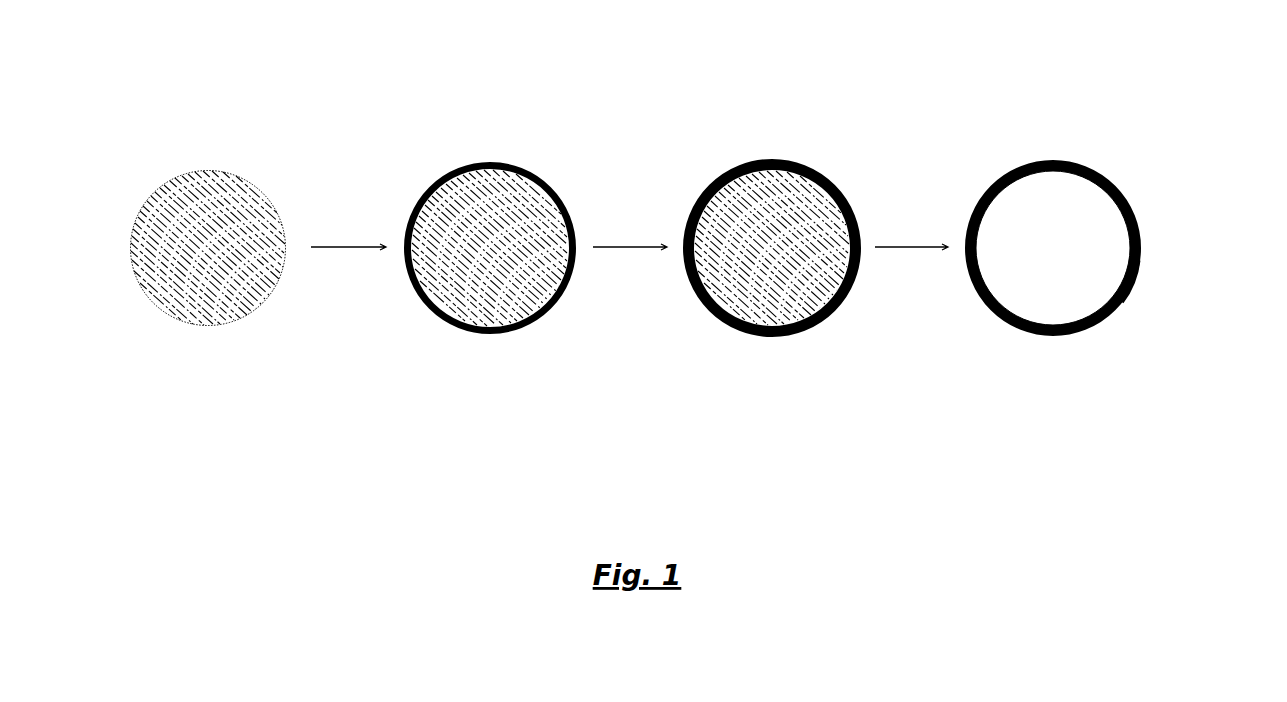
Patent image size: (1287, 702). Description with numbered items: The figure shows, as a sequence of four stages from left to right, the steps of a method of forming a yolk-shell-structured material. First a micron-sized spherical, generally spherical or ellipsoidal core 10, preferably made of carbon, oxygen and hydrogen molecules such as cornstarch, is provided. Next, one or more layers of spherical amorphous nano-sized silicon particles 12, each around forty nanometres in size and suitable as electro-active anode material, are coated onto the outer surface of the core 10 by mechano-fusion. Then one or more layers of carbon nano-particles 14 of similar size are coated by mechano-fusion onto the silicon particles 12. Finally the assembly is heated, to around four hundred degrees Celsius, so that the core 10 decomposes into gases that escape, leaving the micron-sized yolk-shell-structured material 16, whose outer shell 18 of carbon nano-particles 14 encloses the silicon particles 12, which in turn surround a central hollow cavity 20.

The core 10 is at (208, 295).
The nano-sized silicon particles 12 is at (490, 334).
The carbon nano-particles 14 is at (772, 337).
The yolk-shell-structured material 16 is at (1075, 165).
The outer shell 18 is at (1127, 287).
The central hollow cavity 20 is at (1053, 295).